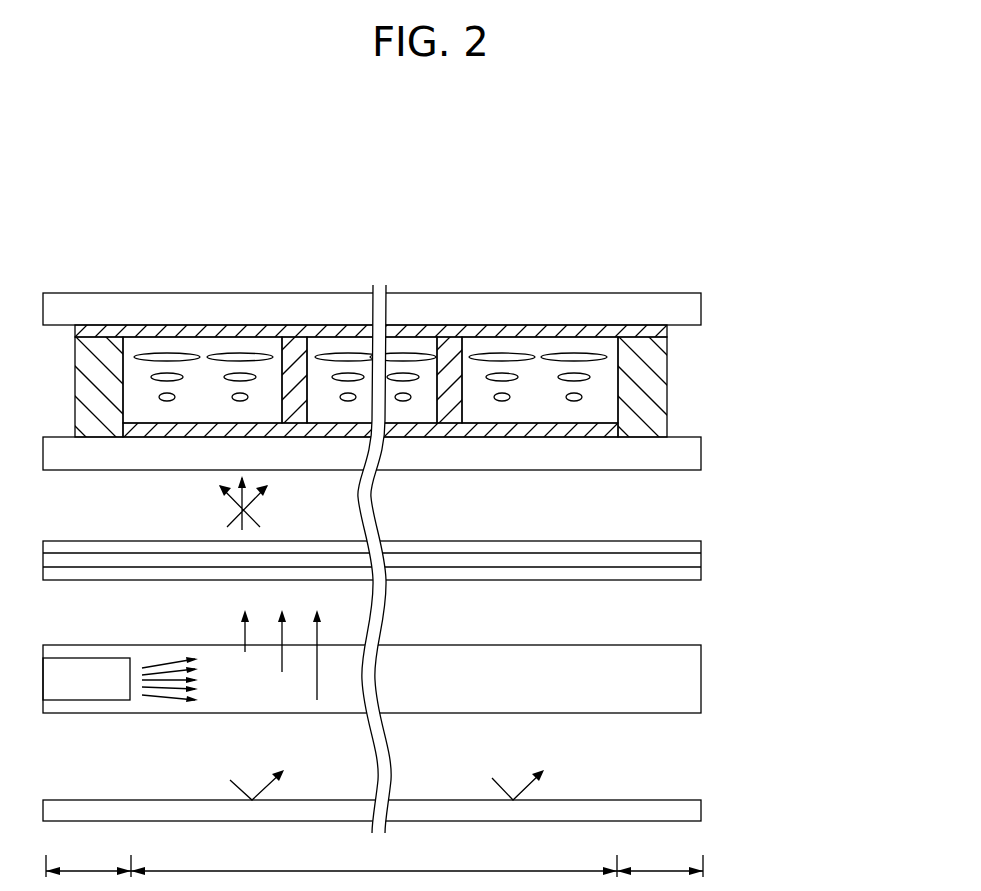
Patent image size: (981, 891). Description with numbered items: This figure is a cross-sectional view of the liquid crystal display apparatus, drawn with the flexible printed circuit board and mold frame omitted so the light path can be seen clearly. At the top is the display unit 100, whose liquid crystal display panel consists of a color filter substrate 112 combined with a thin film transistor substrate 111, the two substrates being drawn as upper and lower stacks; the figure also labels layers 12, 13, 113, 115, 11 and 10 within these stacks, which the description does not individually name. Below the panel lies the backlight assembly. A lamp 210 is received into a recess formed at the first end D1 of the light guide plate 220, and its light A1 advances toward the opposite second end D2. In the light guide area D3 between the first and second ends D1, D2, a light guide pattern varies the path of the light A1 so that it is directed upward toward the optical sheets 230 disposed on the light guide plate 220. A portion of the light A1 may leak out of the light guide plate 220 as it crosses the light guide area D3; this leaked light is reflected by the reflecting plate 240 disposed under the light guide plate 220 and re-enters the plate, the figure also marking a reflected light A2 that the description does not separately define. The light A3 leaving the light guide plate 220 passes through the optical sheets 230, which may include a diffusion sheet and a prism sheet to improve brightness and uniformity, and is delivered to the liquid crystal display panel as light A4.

The display unit 100 is at (456, 406).
The color filter substrate 112 is at (426, 321).
The upper glass substrate 12 is at (690, 310).
The upper electrode / color filter layer 13 is at (667, 333).
The liquid crystal layer 113 is at (667, 352).
The sealant / spacer walls 115 is at (667, 385).
The thin film transistor substrate 111 is at (426, 442).
The lower electrode / TFT array layer 11 is at (667, 418).
The lower glass substrate 10 is at (690, 452).
The optical sheets 230 is at (708, 541).
The light guide plate 220 is at (690, 677).
The lamps 210 is at (76, 676).
The reflecting plate 240 is at (692, 813).
The light emitted from the lamps A1 is at (172, 700).
The light reflected by reflection sheet A2 is at (520, 793).
The light from the light guide plate A3 is at (242, 628).
The light provided to the liquid crystal display panel A4 is at (255, 518).
The first end of the light guide plate D1 is at (88, 863).
The second end of the light guide plate D2 is at (660, 863).
The light guide area D3 is at (374, 862).